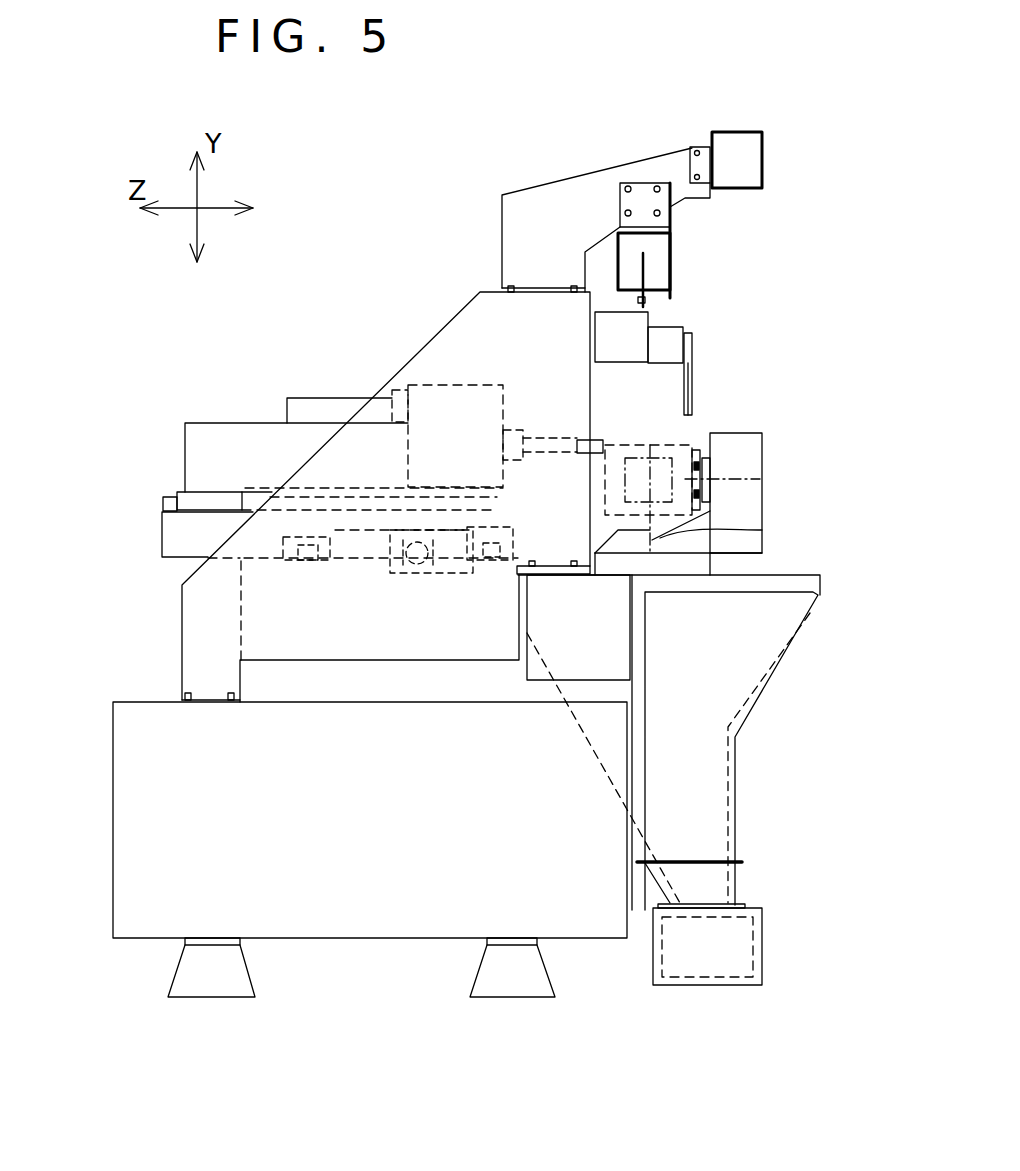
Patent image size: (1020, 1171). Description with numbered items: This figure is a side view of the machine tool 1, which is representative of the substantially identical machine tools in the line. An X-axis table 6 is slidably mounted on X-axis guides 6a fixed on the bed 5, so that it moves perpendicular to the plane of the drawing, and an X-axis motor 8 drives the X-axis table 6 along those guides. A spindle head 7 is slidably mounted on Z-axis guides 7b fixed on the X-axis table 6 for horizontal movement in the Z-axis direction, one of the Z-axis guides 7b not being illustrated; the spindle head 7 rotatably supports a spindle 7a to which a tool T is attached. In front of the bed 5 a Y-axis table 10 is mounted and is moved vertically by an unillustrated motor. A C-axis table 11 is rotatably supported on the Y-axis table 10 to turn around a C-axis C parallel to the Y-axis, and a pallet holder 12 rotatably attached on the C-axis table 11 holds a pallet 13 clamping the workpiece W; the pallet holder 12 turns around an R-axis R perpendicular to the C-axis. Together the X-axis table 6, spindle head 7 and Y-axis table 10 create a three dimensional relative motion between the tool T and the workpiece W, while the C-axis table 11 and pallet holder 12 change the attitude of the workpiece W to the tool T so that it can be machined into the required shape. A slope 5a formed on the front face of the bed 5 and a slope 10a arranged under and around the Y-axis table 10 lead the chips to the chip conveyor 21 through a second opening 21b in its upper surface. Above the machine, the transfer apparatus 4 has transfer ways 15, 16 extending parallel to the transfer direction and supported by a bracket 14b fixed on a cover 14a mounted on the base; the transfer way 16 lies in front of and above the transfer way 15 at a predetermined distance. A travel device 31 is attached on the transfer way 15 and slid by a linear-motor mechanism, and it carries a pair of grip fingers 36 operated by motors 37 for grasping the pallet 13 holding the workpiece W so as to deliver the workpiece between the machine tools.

The machine tool 1 is at (210, 345).
The transfer apparatus 4 is at (660, 133).
The bed 5 is at (122, 882).
The slope 5a is at (592, 715).
The X-axis table 6 is at (170, 548).
The X-axis guides 6a is at (303, 573).
The spindle head 7 is at (422, 384).
The spindle 7a is at (520, 420).
The Z-axis guides 7b is at (172, 497).
The X-axis motor 8 is at (424, 588).
The Y-axis table 10 is at (693, 567).
The slope 10a is at (747, 697).
The C-axis table 11 is at (738, 440).
The pallet holder 12 is at (710, 490).
The pallet 13 is at (648, 447).
The cover 14a is at (480, 290).
The bracket 14b is at (568, 212).
The transfer way 15 is at (673, 257).
The transfer way 16 is at (762, 167).
The chip conveyor 21 is at (758, 953).
The second opening 21b is at (717, 900).
The travel device 31 is at (697, 319).
The grip fingers 36 is at (690, 388).
The motors 37 is at (617, 320).
The tool T is at (580, 438).
The workpiece W is at (625, 492).
The R-axis R is at (770, 463).
The C-axis C is at (777, 532).